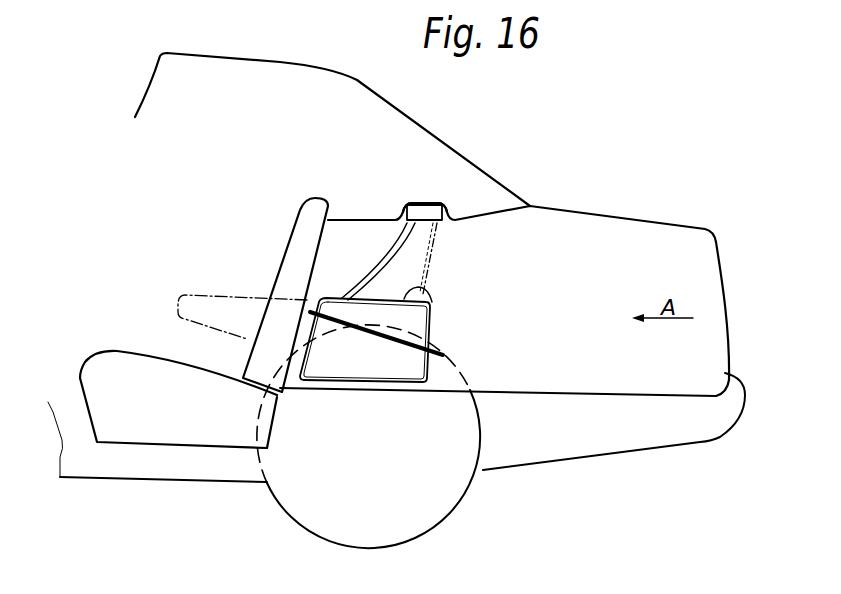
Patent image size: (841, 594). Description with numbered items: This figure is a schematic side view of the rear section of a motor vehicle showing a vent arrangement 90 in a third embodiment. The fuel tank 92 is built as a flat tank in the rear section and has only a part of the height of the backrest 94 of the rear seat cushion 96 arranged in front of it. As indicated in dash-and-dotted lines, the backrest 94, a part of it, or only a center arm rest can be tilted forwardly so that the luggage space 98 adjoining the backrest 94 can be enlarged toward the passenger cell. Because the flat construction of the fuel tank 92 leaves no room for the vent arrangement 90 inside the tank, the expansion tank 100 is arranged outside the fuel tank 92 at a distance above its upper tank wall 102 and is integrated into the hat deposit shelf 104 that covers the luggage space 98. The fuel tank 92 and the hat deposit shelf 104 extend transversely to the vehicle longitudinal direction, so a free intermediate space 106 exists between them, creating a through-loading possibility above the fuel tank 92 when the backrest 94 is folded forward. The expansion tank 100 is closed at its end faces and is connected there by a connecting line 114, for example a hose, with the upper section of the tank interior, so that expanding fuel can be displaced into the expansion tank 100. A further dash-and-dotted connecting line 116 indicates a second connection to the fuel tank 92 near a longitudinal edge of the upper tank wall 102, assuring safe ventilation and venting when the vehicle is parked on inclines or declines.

The vent arrangement 90 is at (433, 201).
The fuel tank 92 is at (443, 343).
The backrest 94 is at (282, 275).
The rear seat cushion 96 is at (148, 380).
The luggage space 98 is at (618, 250).
The expansion tank 100 is at (422, 212).
The upper tank wall 102 is at (423, 295).
The hat deposit shelf 104 is at (360, 219).
The free intermediate space 106 is at (432, 265).
The connecting line 114 is at (363, 283).
The further connecting line 116 is at (440, 233).